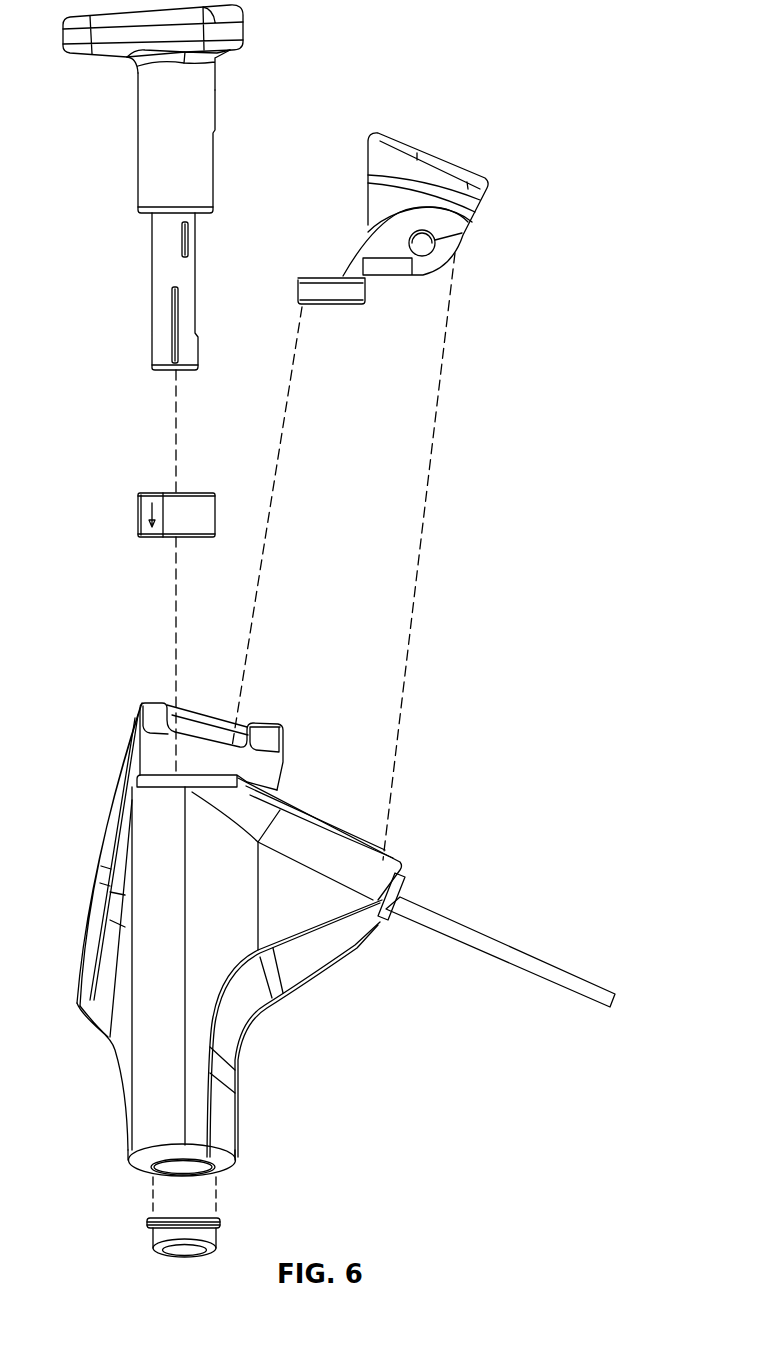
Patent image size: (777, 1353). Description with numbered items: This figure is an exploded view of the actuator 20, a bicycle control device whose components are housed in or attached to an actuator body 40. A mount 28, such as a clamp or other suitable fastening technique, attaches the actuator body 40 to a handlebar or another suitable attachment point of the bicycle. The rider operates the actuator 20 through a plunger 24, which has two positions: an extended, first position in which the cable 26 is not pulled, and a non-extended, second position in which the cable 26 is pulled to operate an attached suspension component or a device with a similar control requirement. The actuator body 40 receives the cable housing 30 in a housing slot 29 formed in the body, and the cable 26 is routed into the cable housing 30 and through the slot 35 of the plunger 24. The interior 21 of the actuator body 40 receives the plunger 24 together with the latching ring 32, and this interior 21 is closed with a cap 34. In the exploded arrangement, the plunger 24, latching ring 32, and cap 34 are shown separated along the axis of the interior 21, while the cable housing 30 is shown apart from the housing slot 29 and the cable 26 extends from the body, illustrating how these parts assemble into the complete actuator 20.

The actuator 20 is at (484, 393).
The interior 21 is at (208, 742).
The plunger 24 is at (237, 35).
The cable 26 is at (513, 942).
The mount 28 is at (142, 702).
The housing slot 29 is at (302, 808).
The cable housing 30 is at (488, 188).
The latching ring 32 is at (198, 511).
The cap 34 is at (213, 1238).
The slot 35 is at (206, 270).
The actuator body 40 is at (312, 968).